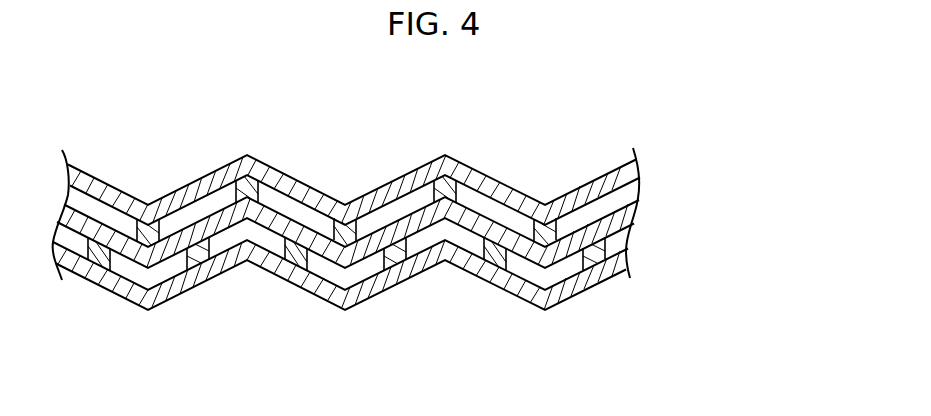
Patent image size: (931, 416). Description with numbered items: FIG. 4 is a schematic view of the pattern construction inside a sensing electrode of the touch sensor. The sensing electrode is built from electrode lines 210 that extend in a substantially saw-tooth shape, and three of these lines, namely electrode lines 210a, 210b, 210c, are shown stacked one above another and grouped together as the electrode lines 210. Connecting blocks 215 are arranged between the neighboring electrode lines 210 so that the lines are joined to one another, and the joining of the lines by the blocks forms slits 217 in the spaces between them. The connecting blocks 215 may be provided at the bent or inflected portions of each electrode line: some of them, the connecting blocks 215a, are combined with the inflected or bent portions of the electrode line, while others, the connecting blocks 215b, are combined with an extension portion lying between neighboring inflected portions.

The electrode lines 210 is at (433, 229).
The electrode line 210a is at (635, 167).
The electrode line 210b is at (633, 215).
The electrode line 210c is at (628, 260).
The connecting blocks 215 is at (346, 236).
The connecting blocks 215a is at (231, 194).
The connecting blocks 215b is at (214, 257).
The slits 217 is at (498, 200).